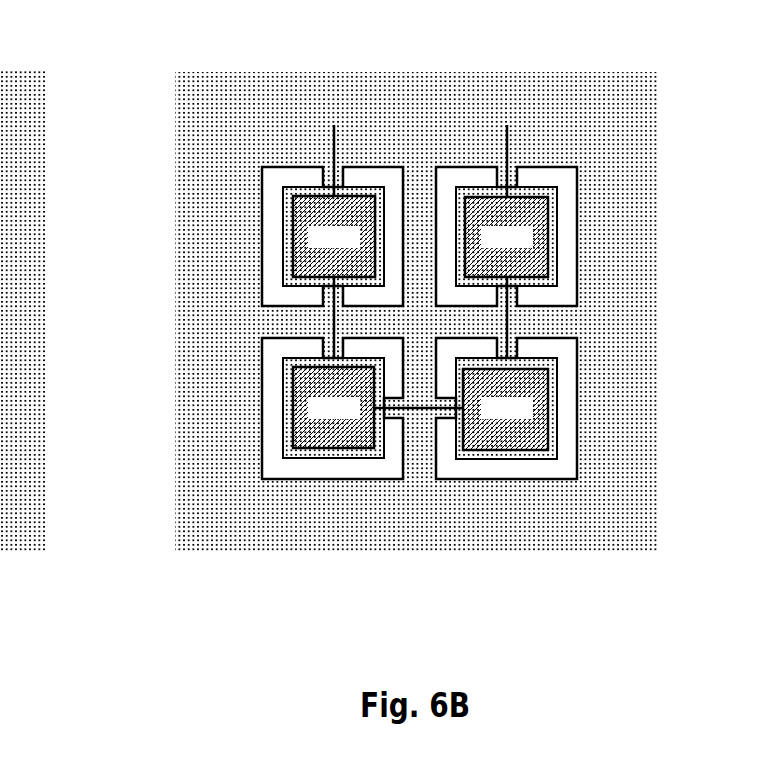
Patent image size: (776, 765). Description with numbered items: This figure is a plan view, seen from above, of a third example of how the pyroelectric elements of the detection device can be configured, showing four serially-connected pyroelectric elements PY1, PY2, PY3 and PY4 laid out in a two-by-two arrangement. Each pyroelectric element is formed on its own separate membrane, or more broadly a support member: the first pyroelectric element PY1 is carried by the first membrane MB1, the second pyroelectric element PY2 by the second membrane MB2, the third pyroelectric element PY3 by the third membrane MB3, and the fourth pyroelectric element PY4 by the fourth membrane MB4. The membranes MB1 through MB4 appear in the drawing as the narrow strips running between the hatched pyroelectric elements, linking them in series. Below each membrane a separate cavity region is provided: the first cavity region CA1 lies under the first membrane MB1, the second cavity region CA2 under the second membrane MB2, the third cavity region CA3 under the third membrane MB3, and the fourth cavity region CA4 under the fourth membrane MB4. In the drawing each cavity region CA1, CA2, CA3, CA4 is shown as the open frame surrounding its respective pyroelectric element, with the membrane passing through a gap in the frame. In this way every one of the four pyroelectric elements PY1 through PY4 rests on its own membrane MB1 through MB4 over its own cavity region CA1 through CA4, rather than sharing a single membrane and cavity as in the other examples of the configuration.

The first membrane MB1 is at (552, 233).
The second membrane MB2 is at (552, 403).
The third membrane MB3 is at (308, 453).
The fourth membrane MB4 is at (365, 192).
The first cavity region CA1 is at (567, 263).
The second cavity region CA2 is at (567, 433).
The third cavity region CA3 is at (355, 470).
The fourth cavity region CA4 is at (374, 176).
The first pyroelectric element PY1 is at (506, 237).
The second pyroelectric element PY2 is at (505, 409).
The third pyroelectric element PY3 is at (333, 407).
The fourth pyroelectric element PY4 is at (334, 236).